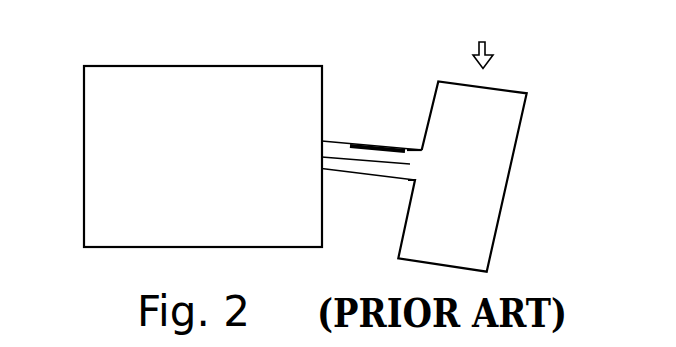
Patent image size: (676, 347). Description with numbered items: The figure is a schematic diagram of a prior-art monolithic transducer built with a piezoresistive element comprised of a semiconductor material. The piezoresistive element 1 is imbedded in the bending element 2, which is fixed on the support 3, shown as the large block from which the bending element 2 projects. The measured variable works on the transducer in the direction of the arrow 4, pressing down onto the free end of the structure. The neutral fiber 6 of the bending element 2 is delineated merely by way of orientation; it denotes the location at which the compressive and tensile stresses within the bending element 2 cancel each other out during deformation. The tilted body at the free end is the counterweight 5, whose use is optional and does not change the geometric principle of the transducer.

The first conductive layer 1 is at (381, 145).
The bending element 2 is at (375, 169).
The support 3 is at (122, 104).
The arrow 4 is at (483, 44).
The counterweight 5 is at (473, 234).
The neutral fiber 6 is at (410, 163).